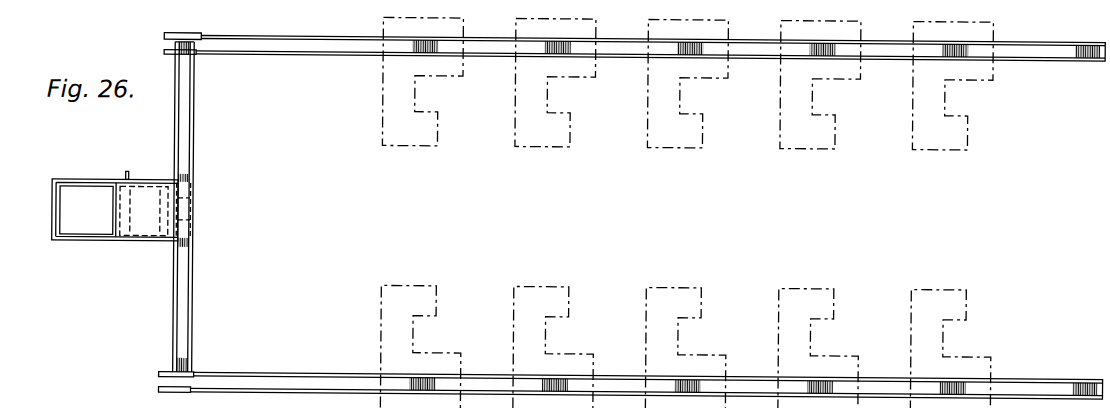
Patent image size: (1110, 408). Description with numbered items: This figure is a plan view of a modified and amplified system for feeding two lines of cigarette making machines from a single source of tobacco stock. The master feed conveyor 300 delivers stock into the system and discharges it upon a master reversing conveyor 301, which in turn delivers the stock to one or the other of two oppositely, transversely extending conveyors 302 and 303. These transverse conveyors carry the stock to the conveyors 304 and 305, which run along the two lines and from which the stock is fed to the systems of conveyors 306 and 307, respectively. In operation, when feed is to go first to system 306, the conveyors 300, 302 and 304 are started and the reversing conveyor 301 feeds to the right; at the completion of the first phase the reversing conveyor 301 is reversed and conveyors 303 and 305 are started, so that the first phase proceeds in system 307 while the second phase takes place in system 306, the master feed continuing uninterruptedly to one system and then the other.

The master feed conveyor 300 is at (142, 185).
The master reversing conveyor 301 is at (193, 244).
The transversely extending conveyor 302 is at (188, 315).
The transversely extending conveyor 303 is at (193, 137).
The conveyor 304 is at (308, 364).
The conveyor 305 is at (347, 54).
The system of conveyors 306 is at (480, 373).
The system of conveyors 307 is at (513, 54).